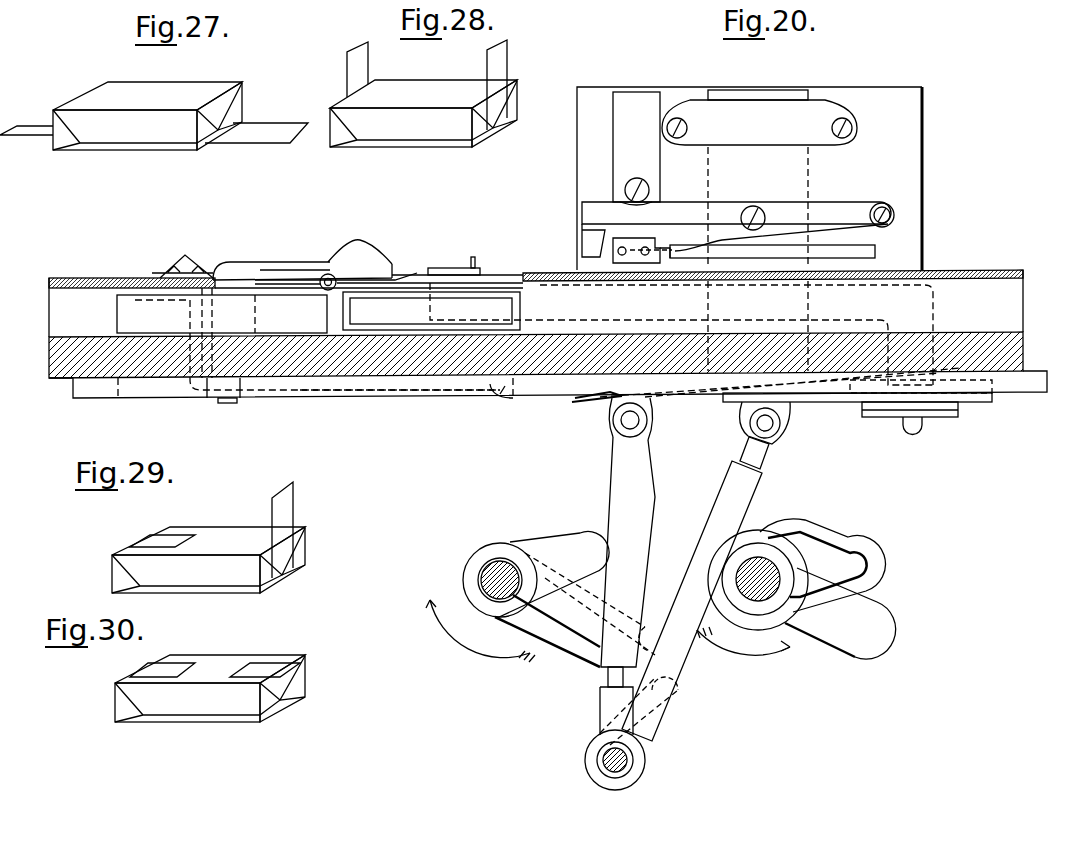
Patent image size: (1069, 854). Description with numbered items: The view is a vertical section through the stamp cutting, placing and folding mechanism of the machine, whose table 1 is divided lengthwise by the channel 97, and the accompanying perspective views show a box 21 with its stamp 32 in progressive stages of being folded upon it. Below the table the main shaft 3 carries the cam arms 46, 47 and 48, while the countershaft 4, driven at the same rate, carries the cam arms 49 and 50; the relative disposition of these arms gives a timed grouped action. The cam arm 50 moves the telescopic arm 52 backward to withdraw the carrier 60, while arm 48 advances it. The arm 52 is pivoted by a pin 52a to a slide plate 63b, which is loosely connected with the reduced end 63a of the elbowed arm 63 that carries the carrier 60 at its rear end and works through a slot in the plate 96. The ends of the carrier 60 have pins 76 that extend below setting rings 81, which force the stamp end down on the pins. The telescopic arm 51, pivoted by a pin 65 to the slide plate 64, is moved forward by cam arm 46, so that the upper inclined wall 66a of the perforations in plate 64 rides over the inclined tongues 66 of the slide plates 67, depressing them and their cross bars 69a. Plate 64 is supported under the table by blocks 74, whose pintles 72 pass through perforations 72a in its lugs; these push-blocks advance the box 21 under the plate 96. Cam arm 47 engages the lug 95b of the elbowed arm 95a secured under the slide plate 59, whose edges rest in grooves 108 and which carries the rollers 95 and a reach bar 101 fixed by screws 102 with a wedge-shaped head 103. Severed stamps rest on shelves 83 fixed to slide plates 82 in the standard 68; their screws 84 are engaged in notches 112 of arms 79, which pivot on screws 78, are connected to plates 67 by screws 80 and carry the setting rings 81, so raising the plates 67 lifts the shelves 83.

In FIG. 20, the table 1 is at (62, 363).
In FIG. 20, the main shaft 3 is at (766, 578).
In FIG. 20, the countershaft 4 is at (480, 573).
In FIG. 27, the box 21 is at (110, 101).
In FIG. 28, the box 21 is at (407, 125).
In FIG. 29, the box 21 is at (212, 540).
In FIG. 30, the box 21 is at (220, 666).
In FIG. 20, the box 21 is at (431, 311).
In FIG. 27, the stamp 32 is at (262, 130).
In FIG. 28, the stamp 32 is at (368, 66).
In FIG. 29, the stamp 32 is at (283, 516).
In FIG. 20, the cam arm 46 is at (550, 540).
In FIG. 20, the cam arm 47 is at (592, 655).
In FIG. 20, the cam arm 48 is at (577, 617).
In FIG. 20, the cam arm 49 is at (873, 568).
In FIG. 20, the cam arm 50 is at (877, 635).
In FIG. 20, the telescopic arm 51 is at (610, 481).
In FIG. 20, the telescopic arm 52 is at (752, 487).
In FIG. 20, the pin 52a is at (770, 425).
In FIG. 20, the slide plate 59 is at (115, 287).
In FIG. 20, the carrier 60 is at (453, 280).
In FIG. 20, the elbowed arm 63 is at (430, 313).
In FIG. 20, the reduced end 63a is at (913, 426).
In FIG. 20, the slide plate 63b is at (838, 400).
In FIG. 20, the slide plate 64 is at (550, 385).
In FIG. 20, the pin 65 is at (619, 428).
In FIG. 20, the inclined tongue 66 is at (603, 405).
In FIG. 20, the upper inclined wall 66a is at (597, 388).
In FIG. 20, the slide plate 67 is at (783, 97).
In FIG. 20, the standard 68 is at (908, 107).
In FIG. 20, the cross bar 69a is at (723, 113).
In FIG. 20, the pintle 72 is at (230, 403).
In FIG. 20, the perforation 72a is at (218, 386).
In FIG. 20, the block 74 is at (123, 315).
In FIG. 20, the pin 76 is at (473, 263).
In FIG. 20, the screw 78 is at (894, 218).
In FIG. 20, the arm 79 is at (605, 210).
In FIG. 20, the screw 80 is at (760, 218).
In FIG. 20, the setting ring 81 is at (603, 231).
In FIG. 20, the slide plate 82 is at (637, 100).
In FIG. 20, the shelf 83 is at (867, 253).
In FIG. 20, the screw 84 is at (650, 193).
In FIG. 20, the roller 95 is at (326, 275).
In FIG. 20, the elbowed arm 95a is at (363, 392).
In FIG. 20, the lug 95b is at (505, 405).
In FIG. 20, the plate 96 is at (543, 274).
In FIG. 20, the channel 97 is at (539, 339).
In FIG. 20, the reach bar 101 is at (252, 262).
In FIG. 20, the screw 102 is at (179, 259).
In FIG. 20, the wedge-shaped head 103 is at (355, 253).
In FIG. 20, the groove 108 is at (397, 282).
In FIG. 20, the notch 112 is at (635, 204).